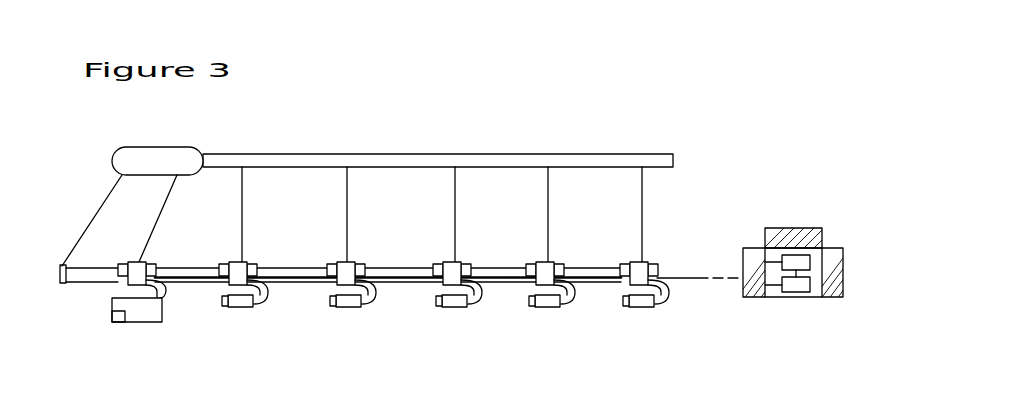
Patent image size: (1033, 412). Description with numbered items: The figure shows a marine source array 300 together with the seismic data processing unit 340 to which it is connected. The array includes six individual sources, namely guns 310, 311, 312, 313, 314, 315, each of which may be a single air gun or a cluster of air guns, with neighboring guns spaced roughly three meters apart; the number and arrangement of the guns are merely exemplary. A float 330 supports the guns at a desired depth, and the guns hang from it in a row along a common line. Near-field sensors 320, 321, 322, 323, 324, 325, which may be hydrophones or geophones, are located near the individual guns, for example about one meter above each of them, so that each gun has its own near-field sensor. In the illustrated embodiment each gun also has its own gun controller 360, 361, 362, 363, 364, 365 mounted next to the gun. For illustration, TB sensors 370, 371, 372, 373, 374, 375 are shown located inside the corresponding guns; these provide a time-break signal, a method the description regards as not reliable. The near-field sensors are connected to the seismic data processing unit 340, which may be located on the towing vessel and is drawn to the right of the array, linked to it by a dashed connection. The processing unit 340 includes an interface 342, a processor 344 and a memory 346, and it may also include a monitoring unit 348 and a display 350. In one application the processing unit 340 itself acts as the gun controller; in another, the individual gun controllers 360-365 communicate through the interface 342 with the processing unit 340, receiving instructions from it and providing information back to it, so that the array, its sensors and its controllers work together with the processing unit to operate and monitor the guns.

The marine source array 300 is at (370, 148).
The gun 310 is at (142, 322).
The gun 311 is at (237, 307).
The gun 312 is at (344, 307).
The gun 313 is at (450, 307).
The gun 314 is at (544, 307).
The gun 315 is at (638, 307).
The near-field sensor 320 is at (145, 262).
The near-field sensor 321 is at (246, 262).
The near-field sensor 322 is at (354, 262).
The near-field sensor 323 is at (460, 262).
The near-field sensor 324 is at (553, 262).
The near-field sensor 325 is at (648, 264).
The float 330 is at (152, 147).
The seismic data processing unit 340 is at (765, 221).
The interface 342 is at (750, 287).
The processor 344 is at (800, 287).
The memory 346 is at (798, 262).
The monitoring unit 348 is at (778, 232).
The display 350 is at (832, 290).
The gun controller 360 is at (133, 270).
The gun controller 361 is at (235, 262).
The gun controller 362 is at (343, 262).
The gun controller 363 is at (448, 262).
The gun controller 364 is at (541, 262).
The gun controller 365 is at (634, 262).
The TB sensor 370 is at (118, 317).
The TB sensor 371 is at (222, 303).
The TB sensor 372 is at (330, 303).
The TB sensor 373 is at (436, 303).
The TB sensor 374 is at (529, 303).
The TB sensor 375 is at (623, 303).